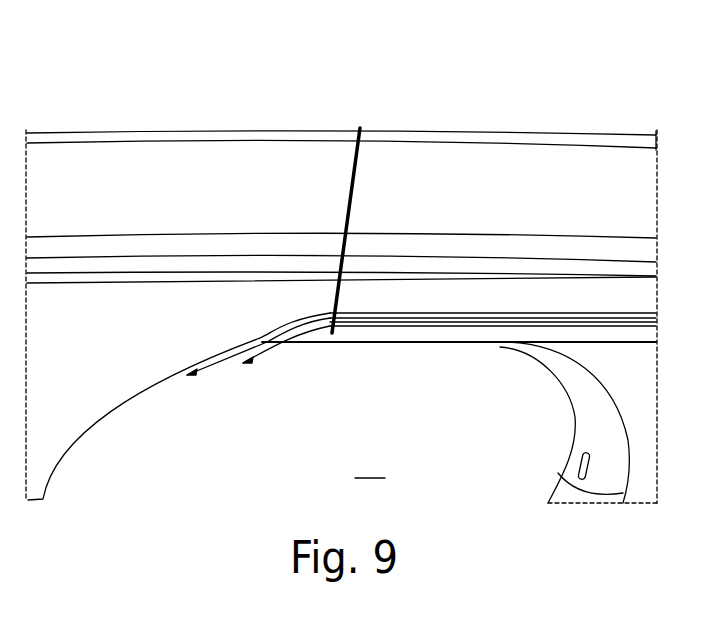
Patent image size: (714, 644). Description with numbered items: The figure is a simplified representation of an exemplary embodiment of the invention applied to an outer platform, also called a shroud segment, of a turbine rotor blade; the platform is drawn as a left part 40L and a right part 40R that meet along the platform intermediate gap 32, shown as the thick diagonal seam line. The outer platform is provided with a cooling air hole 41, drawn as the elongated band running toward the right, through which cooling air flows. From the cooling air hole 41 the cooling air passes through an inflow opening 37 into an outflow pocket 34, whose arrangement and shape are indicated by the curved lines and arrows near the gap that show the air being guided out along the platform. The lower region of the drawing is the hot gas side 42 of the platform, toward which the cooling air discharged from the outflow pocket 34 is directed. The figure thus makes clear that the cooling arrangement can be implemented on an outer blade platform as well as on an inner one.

The platform intermediate gap 32 is at (361, 129).
The outflow pocket 34 is at (303, 341).
The inflow opening 37 is at (324, 343).
The outer blade platform of the turbine rotor blade 40L is at (144, 398).
The outer blade platform of the turbine rotor blade 40R is at (565, 394).
The cooling air hole in the outer platform 41 is at (400, 328).
The hot gas side 42 is at (370, 467).